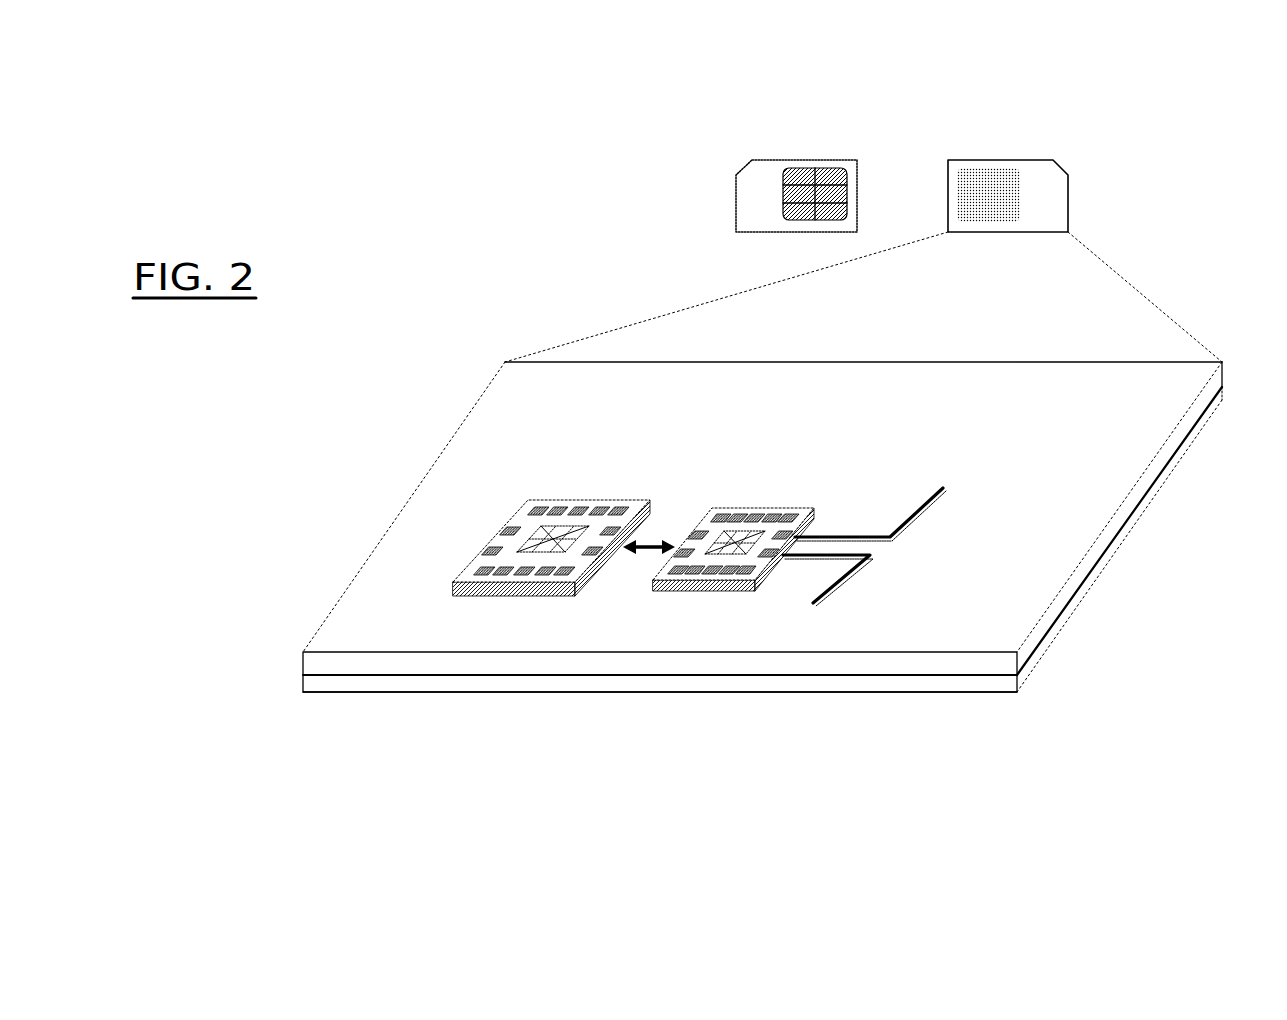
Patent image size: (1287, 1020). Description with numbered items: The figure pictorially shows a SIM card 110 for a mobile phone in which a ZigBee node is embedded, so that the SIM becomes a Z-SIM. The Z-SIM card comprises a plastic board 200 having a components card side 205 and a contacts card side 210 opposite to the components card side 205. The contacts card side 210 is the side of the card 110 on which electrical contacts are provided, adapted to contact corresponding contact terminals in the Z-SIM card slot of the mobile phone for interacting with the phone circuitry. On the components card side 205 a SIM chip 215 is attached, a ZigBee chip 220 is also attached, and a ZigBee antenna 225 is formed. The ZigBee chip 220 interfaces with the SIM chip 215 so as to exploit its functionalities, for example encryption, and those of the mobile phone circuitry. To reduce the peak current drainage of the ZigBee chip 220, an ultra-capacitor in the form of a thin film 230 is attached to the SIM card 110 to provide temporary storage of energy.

The SIM card 110 is at (322, 202).
The plastic board 200 is at (427, 478).
The components card side 205 is at (1068, 197).
The contacts card side 210 is at (735, 188).
The SIM chip 215 is at (480, 550).
The ZigBee chip 220 is at (762, 508).
The ZigBee antenna 225 is at (863, 567).
The thin film 230 is at (730, 683).